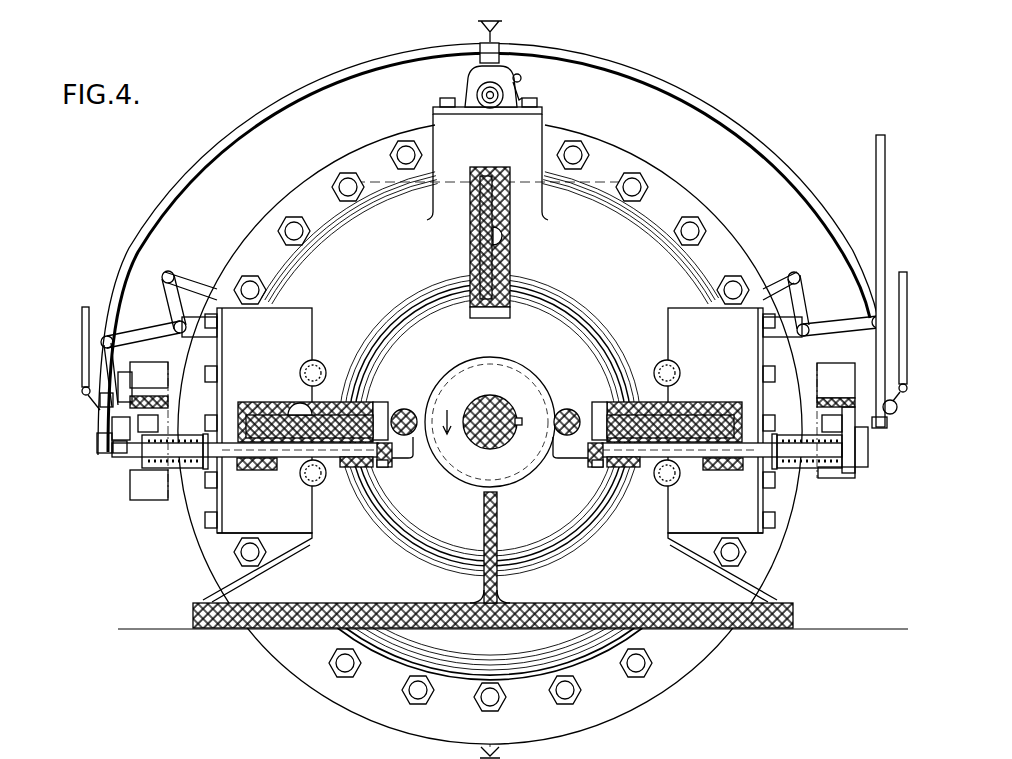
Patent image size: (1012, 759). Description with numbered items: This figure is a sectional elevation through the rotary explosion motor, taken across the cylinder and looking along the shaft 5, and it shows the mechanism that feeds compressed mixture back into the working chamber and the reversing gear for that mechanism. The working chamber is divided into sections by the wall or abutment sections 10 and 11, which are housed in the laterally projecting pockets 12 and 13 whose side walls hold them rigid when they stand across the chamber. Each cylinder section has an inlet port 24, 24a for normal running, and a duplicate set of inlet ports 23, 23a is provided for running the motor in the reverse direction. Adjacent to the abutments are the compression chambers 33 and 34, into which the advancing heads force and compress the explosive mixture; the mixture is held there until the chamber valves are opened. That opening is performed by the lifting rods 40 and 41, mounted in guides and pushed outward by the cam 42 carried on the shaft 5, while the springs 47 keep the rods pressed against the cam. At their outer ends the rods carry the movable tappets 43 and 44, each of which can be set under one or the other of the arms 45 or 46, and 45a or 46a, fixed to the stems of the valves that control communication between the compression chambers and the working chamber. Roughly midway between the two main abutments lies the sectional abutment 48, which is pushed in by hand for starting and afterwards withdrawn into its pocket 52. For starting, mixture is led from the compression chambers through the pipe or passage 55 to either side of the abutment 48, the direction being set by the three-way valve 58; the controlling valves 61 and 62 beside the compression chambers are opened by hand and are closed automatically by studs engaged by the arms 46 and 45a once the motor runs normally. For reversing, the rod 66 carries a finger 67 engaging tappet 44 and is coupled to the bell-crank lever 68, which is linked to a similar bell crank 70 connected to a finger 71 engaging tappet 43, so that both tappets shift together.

The shaft 5 is at (487, 443).
The abutment section 10 is at (326, 410).
The abutment section 11 is at (710, 413).
The pocket 12 is at (280, 410).
The pocket 13 is at (633, 422).
The inlet port 23 is at (314, 360).
The inlet port 23a is at (668, 486).
The inlet port 24 is at (324, 482).
The inlet port 24a is at (666, 361).
The compression chamber 33 is at (182, 365).
The compression chamber 34 is at (795, 392).
The lifting rod 40 is at (295, 470).
The lifting rod 41 is at (612, 470).
The cam 42 is at (472, 377).
The tappet 43 is at (123, 458).
The tappet 44 is at (848, 430).
The arm 45 is at (120, 383).
The arm 45a is at (867, 452).
The arm 46 is at (102, 427).
The arm 46a is at (862, 382).
The spring 47 is at (165, 490).
The abutment section 48 is at (478, 247).
The pocket 52 is at (510, 268).
The pipe or passage 55 is at (282, 99).
The three-way valve 58 is at (483, 97).
The controlling valve 61 is at (100, 403).
The controlling valve 62 is at (897, 410).
The rod 66 is at (886, 302).
The finger 67 is at (880, 425).
The bell-crank lever 68 is at (800, 300).
The bell crank 70 is at (173, 303).
The finger 71 is at (98, 444).